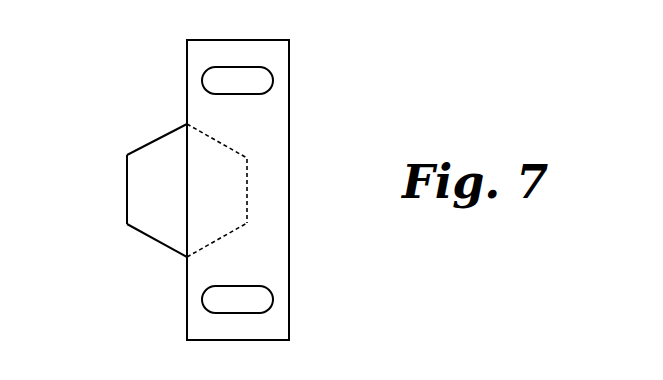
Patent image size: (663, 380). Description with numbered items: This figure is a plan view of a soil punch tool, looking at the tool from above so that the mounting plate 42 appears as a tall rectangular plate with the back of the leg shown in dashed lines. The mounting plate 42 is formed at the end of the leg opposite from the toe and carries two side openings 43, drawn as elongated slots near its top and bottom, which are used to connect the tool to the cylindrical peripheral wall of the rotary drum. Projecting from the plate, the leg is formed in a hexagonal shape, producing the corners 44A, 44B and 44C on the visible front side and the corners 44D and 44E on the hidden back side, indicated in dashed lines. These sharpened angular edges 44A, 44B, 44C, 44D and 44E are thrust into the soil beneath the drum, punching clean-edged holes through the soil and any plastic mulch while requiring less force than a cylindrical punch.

The mounting plate 42 is at (270, 107).
The side openings 43 is at (253, 82).
The corner 44A is at (127, 224).
The corner 44B is at (127, 155).
The corner 44C is at (187, 124).
The corner 44D is at (247, 158).
The corner 44E is at (247, 223).